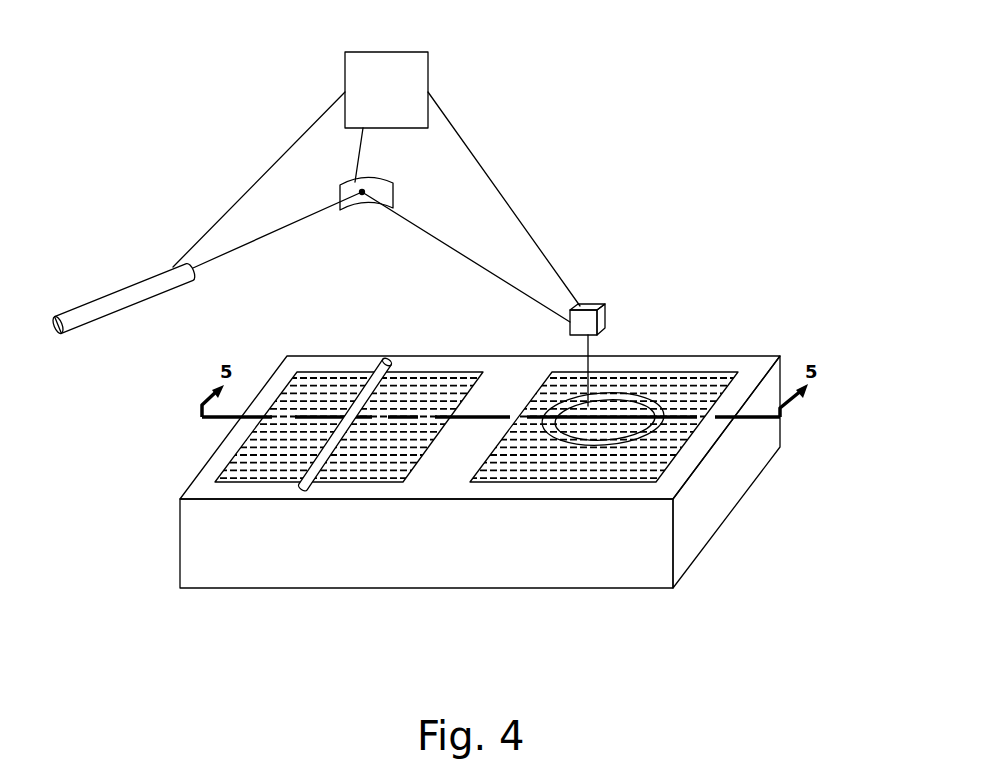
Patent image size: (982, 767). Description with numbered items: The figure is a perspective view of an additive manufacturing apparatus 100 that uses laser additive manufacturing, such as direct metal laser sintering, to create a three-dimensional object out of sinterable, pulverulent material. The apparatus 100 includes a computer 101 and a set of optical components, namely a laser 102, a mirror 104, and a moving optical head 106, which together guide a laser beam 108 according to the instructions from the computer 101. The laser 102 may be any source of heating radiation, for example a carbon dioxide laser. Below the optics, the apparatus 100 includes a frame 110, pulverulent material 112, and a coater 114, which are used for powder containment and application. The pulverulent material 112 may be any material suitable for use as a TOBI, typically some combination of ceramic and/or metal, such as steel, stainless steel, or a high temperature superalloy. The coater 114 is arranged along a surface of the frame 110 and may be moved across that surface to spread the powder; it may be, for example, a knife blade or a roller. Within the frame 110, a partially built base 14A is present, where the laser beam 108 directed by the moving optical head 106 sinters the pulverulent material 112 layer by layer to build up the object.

The additive manufacturing apparatus 100 is at (778, 280).
The computer 101 is at (428, 68).
The laser 102 is at (103, 308).
The mirror 104 is at (370, 183).
The moving optical head 106 is at (588, 304).
The laser beam 108 is at (262, 238).
The frame 110 is at (255, 488).
The pulverulent material 112 is at (367, 467).
The coater 114 is at (382, 362).
The partially built base 14A is at (637, 395).